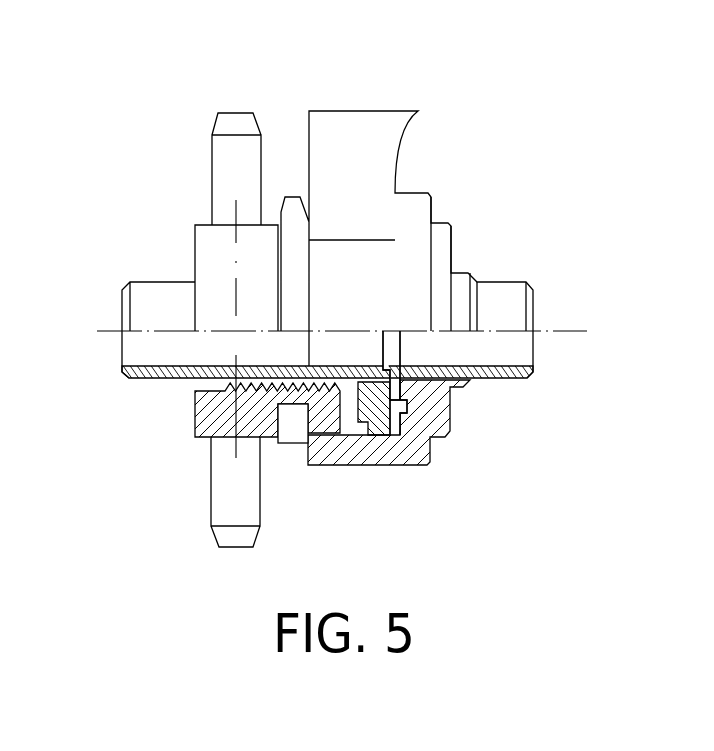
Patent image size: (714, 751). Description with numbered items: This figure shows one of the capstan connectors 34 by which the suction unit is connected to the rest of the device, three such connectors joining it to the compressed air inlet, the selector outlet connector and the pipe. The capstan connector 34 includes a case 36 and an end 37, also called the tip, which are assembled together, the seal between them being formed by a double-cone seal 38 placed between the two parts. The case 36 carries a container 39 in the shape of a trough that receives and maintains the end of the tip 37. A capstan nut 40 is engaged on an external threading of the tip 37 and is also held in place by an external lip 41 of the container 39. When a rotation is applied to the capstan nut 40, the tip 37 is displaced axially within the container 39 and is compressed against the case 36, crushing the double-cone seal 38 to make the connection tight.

The capstan connector 34 is at (317, 324).
The case 36 is at (415, 268).
The end 37 is at (143, 305).
The double-cone seal 38 is at (395, 350).
The container 39 is at (358, 127).
The capstan nut 40 is at (213, 413).
The external lip 41 is at (287, 433).